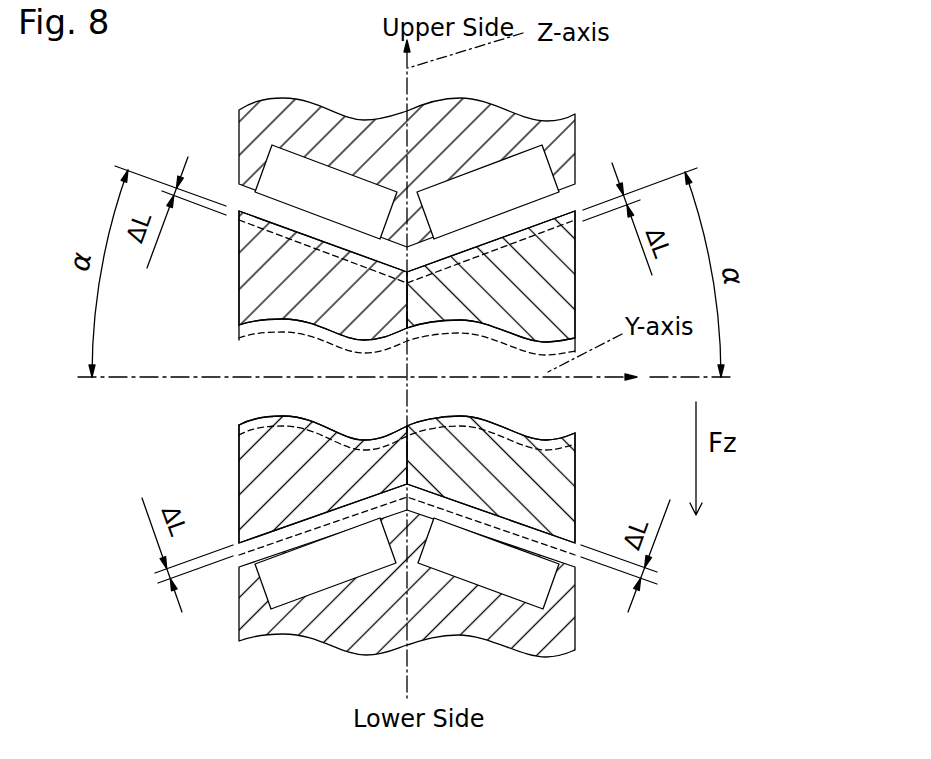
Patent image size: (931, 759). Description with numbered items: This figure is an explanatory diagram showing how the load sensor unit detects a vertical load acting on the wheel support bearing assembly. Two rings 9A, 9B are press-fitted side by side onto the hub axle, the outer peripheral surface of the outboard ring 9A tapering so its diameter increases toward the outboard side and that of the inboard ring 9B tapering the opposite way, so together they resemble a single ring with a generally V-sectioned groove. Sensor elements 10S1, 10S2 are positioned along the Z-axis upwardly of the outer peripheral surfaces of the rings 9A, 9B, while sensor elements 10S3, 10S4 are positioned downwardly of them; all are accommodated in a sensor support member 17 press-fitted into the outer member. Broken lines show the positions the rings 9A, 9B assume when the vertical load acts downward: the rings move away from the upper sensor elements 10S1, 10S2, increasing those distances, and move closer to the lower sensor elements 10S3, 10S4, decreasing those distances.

The sensor support member 17 is at (407, 131).
The sensor element 10S1 is at (307, 170).
The sensor element 10S2 is at (512, 163).
The sensor element 10S3 is at (287, 570).
The sensor element 10S4 is at (498, 570).
The ring 9A is at (310, 303).
The ring 9B is at (478, 300).